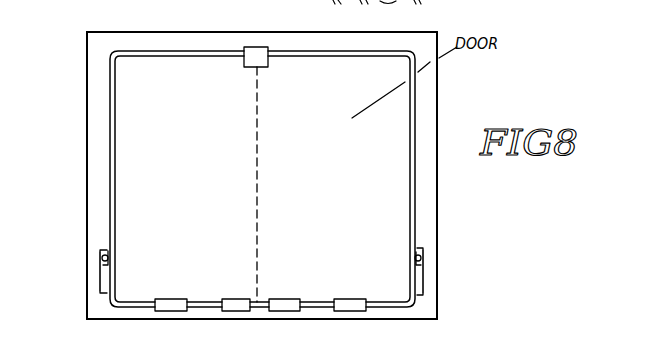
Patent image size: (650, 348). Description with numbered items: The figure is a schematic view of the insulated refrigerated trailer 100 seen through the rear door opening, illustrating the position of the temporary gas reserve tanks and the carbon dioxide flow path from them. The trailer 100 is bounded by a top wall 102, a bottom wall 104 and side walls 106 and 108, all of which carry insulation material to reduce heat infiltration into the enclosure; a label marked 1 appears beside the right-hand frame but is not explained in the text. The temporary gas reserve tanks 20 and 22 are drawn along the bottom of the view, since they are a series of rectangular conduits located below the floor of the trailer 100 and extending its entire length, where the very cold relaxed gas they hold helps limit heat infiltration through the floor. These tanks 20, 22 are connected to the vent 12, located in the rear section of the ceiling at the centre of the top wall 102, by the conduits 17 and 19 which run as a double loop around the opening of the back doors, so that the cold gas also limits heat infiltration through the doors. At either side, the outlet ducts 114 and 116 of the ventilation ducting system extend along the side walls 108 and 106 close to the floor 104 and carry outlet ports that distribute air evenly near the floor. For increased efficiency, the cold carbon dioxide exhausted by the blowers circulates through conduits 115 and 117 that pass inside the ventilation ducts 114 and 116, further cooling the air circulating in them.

The trailer 100 is at (81, 20).
The top wall 102 is at (177, 32).
The bottom wall 104 is at (425, 320).
The side wall 106 is at (440, 126).
The side wall 108 is at (86, 141).
The vent 12 is at (256, 174).
The conduit 17 is at (118, 119).
The conduit 19 is at (118, 185).
The door 1 is at (400, 146).
The temporary gas reserve tank 20 is at (234, 299).
The temporary gas reserve tank 22 is at (174, 299).
The outlet duct 114 is at (95, 284).
The conduit 115 is at (103, 251).
The outlet duct 116 is at (428, 283).
The conduit 117 is at (423, 247).